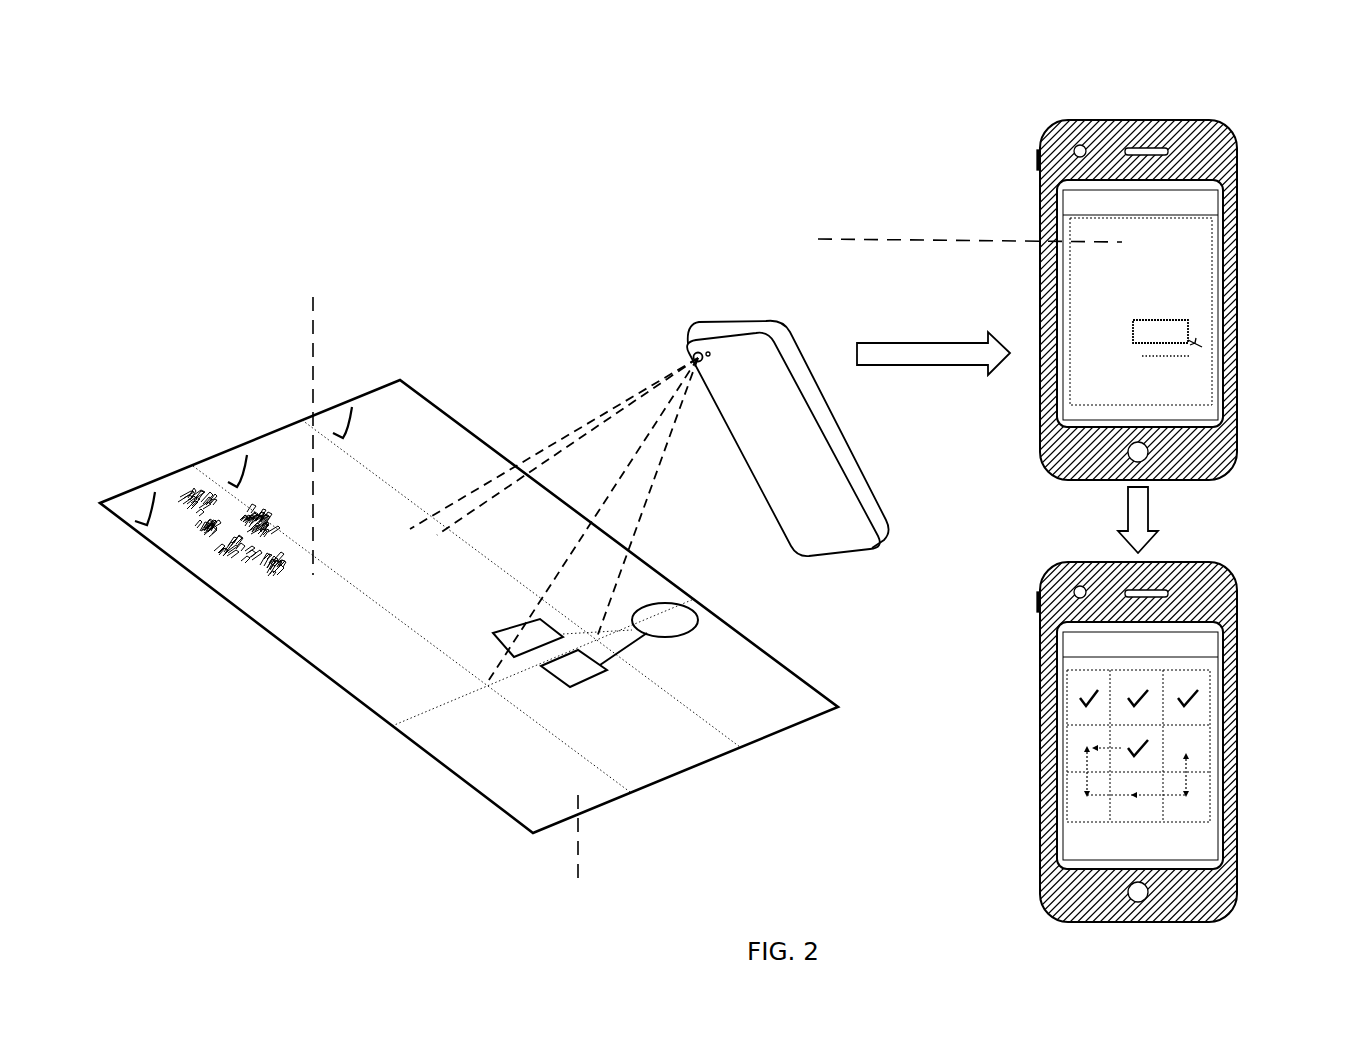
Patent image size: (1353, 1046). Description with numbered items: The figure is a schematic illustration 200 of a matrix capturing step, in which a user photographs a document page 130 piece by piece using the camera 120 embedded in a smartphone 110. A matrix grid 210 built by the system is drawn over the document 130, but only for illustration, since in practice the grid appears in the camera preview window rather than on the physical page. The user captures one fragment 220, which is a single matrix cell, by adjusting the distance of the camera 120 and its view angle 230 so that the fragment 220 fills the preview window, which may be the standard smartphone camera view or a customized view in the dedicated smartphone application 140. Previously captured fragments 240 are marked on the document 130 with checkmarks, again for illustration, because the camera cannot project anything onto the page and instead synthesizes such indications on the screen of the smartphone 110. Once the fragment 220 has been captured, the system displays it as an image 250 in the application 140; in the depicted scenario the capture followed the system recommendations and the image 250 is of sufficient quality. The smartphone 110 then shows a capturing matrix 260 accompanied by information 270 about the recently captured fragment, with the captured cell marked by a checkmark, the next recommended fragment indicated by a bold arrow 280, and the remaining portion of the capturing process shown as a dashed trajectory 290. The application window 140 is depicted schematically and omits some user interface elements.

The schematic illustration 200 is at (1317, 147).
The smartphone 110 is at (797, 340).
The camera 120 is at (697, 355).
The document page 130 is at (427, 386).
The smartphone application 140 is at (1067, 215).
The matrix grid 210 is at (478, 695).
The fragment 220 is at (436, 636).
The view angle 230 is at (585, 442).
The previously captured fragments 240 is at (172, 488).
The image 250 is at (1092, 325).
The capturing matrix 260 is at (1077, 678).
The information for a recently captured fragment 270 is at (1180, 637).
The bold arrow 280 is at (1092, 738).
The dashed trajectory 290 is at (1083, 785).